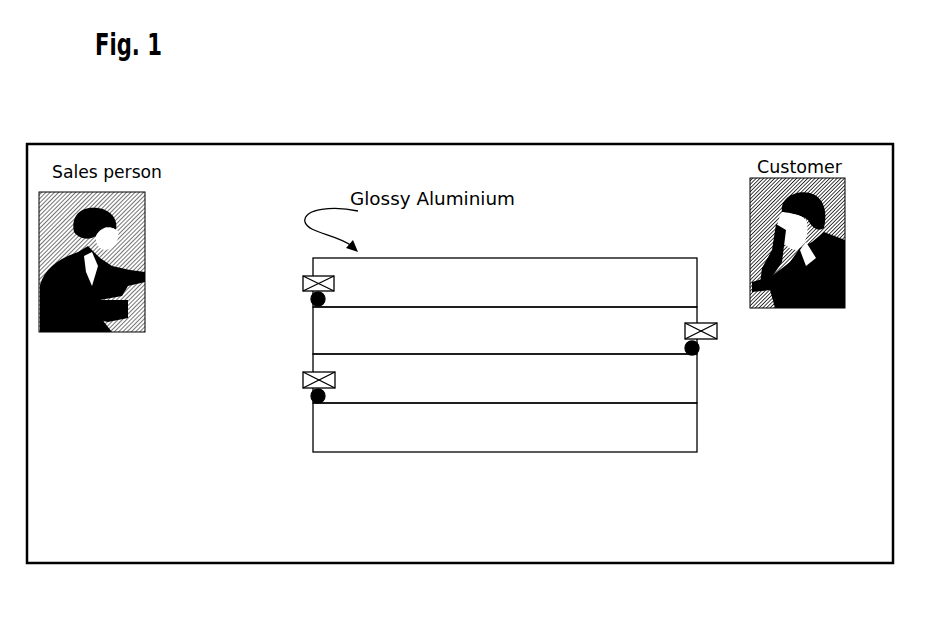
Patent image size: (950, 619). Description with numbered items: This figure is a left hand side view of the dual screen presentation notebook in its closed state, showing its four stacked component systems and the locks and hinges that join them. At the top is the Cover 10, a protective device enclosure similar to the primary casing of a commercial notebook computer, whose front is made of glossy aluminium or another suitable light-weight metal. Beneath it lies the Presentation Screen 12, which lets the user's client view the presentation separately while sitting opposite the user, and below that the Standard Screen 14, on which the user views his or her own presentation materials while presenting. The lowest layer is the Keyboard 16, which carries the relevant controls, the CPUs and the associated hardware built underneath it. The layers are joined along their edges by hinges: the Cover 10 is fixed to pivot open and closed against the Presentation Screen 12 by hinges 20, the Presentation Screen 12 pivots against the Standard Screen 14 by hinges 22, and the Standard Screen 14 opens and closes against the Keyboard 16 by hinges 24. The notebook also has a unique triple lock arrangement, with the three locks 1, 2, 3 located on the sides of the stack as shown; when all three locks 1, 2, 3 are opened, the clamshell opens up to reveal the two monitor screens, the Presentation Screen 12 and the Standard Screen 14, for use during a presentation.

The Cover 10 is at (505, 282).
The Presentation Screen 12 is at (505, 330).
The Standard Screen 14 is at (505, 378).
The Keyboard 16 is at (505, 427).
The lock 1 is at (292, 372).
The lock 2 is at (730, 323).
The lock 3 is at (292, 275).
The hinges 20 is at (302, 306).
The hinges 22 is at (710, 355).
The hinges 24 is at (302, 403).